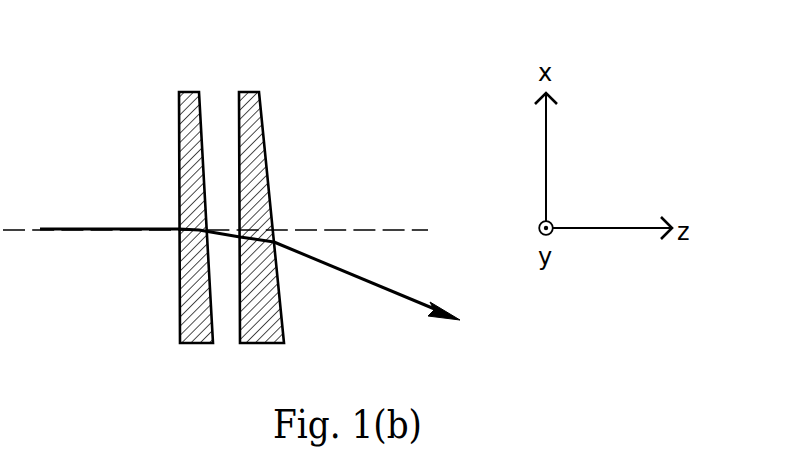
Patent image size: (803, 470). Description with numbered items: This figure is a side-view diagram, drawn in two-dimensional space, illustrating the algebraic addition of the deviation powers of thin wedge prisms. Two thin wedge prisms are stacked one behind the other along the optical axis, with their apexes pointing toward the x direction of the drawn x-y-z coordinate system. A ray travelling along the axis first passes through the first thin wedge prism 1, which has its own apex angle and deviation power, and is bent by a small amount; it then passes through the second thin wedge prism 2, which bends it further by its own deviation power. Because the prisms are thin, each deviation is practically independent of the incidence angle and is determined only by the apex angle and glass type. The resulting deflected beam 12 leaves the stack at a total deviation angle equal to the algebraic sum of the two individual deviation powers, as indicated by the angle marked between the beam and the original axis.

The first wedge prism (wedge angle ξ1, deflection α1) 1 is at (188, 198).
The second wedge prism (wedge angle ξ2, deflection α2) 2 is at (263, 198).
The deflected beam with total deflection angle α1+α2 12 is at (348, 232).